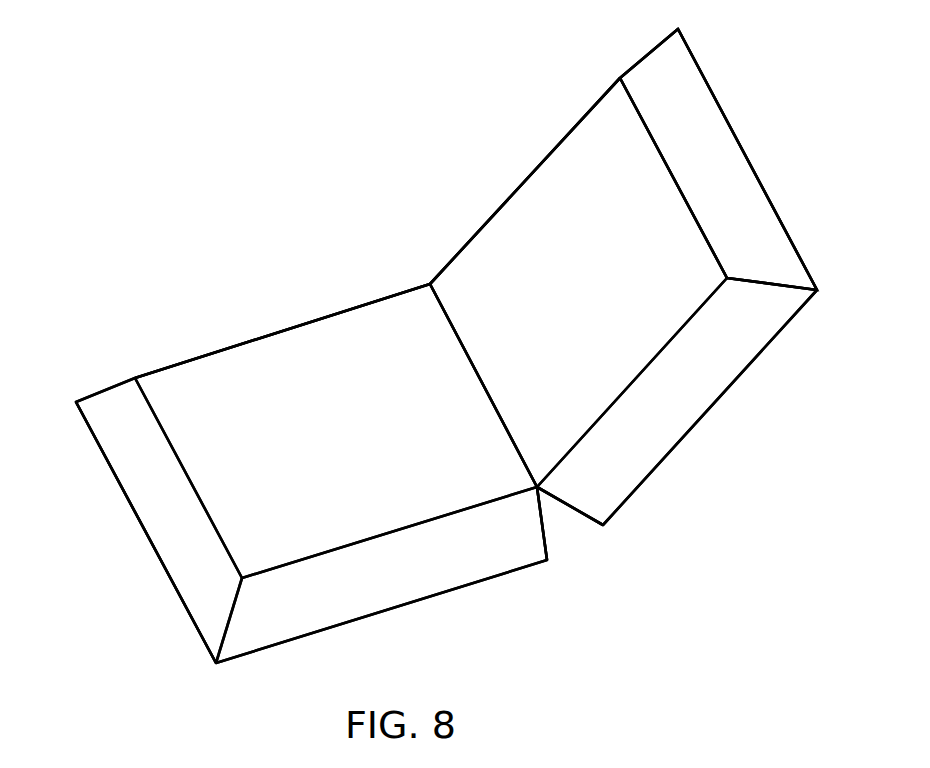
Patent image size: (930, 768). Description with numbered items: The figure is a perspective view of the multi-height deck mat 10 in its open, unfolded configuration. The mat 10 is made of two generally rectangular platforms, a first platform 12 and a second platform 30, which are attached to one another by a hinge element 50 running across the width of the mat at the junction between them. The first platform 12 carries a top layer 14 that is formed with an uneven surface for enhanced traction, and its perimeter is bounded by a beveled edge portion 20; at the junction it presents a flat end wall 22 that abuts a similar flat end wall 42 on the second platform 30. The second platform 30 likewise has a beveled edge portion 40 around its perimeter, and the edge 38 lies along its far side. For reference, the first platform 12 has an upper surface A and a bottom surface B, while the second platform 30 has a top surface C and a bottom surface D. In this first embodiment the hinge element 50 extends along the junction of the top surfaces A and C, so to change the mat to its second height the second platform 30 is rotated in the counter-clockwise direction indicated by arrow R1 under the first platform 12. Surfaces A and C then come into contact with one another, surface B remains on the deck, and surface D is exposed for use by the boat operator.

The multi-height deck mat 10 is at (228, 320).
The first platform 12 is at (150, 362).
The top layer 14 is at (303, 350).
The beveled edge portion 20 is at (152, 512).
The flat end wall 22 is at (548, 538).
The second platform 30 is at (552, 117).
The second panel top edge 38 is at (613, 107).
The beveled edge portion 40 is at (697, 88).
The flat end wall 42 is at (577, 517).
The hinge element 50 is at (492, 396).
The arrow indicating counter-clockwise rotation R1 is at (433, 188).
The upper surface A is at (342, 450).
The bottom surface B is at (448, 605).
The top surface C is at (594, 272).
The bottom surface D is at (755, 393).